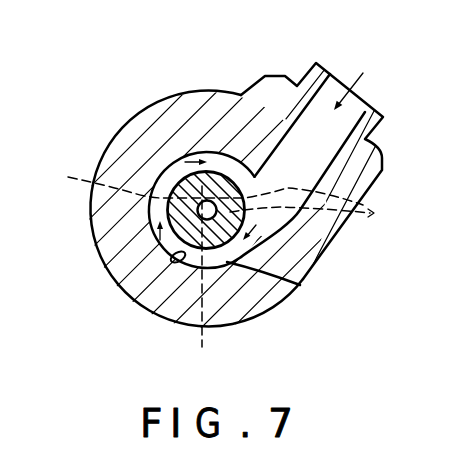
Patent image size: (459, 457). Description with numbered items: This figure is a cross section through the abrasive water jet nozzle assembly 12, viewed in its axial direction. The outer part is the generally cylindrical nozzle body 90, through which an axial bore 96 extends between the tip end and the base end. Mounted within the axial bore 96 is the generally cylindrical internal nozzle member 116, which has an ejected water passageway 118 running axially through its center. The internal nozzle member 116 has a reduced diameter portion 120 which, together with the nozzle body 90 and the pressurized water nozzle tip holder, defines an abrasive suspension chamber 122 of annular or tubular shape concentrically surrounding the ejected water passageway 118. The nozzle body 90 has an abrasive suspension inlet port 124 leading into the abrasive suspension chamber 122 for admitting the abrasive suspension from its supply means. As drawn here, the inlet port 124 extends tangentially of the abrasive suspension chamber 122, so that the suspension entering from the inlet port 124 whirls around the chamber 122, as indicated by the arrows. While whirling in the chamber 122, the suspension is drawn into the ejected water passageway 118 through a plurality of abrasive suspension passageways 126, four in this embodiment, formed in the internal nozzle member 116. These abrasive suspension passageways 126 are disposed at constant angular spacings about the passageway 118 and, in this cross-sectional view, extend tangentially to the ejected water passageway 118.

The abrasive water jet nozzle assembly 12 is at (229, 182).
The nozzle body 90 is at (97, 256).
The axial bore 96 is at (182, 267).
The internal nozzle member 116 is at (222, 166).
The ejected water passageway 118 is at (300, 285).
The reduced diameter portion 120 is at (177, 192).
The abrasive suspension chamber 122 is at (218, 260).
The abrasive suspension inlet port 124 is at (336, 105).
The abrasive suspension passageways 126 is at (222, 273).